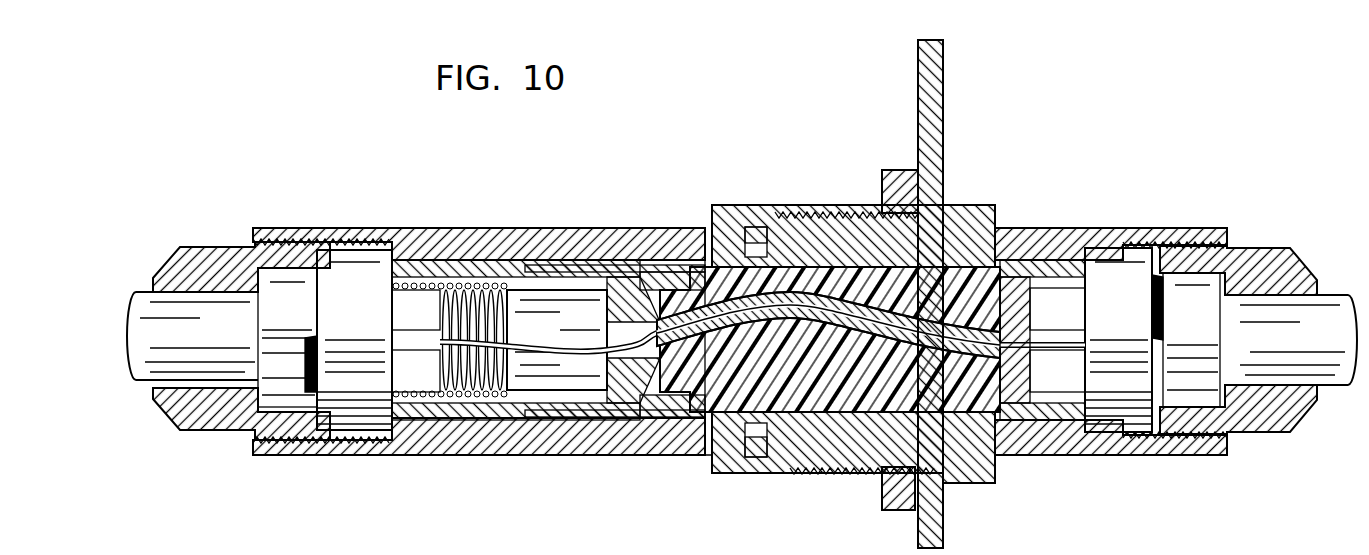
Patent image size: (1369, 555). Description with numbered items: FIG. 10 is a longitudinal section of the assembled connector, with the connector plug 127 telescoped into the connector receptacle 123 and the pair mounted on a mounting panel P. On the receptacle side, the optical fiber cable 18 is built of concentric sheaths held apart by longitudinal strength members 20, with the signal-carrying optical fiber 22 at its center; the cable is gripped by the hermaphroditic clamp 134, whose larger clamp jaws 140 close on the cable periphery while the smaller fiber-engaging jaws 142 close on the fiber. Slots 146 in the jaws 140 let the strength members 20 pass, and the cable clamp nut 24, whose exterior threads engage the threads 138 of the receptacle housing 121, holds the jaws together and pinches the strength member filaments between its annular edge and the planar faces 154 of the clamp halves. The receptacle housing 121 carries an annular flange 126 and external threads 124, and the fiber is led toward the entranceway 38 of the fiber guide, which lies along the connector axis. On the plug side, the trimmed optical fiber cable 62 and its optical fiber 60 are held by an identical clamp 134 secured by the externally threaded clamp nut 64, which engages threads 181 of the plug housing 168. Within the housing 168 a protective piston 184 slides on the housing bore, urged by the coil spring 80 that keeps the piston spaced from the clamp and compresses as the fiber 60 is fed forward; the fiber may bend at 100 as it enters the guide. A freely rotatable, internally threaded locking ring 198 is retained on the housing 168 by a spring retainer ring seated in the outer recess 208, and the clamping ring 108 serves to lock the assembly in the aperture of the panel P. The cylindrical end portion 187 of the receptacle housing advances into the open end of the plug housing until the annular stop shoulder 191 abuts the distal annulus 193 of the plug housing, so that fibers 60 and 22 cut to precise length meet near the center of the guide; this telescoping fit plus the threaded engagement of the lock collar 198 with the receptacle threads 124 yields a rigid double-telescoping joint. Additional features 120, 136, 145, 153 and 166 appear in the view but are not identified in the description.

The optical fiber cable 18 is at (1284, 331).
The strength members 20 is at (1158, 290).
The optical fiber 22 is at (1015, 412).
The cable clamp nut 24 is at (200, 425).
The entranceway 38 is at (660, 398).
The optical fiber 60 is at (510, 339).
The optical fiber cable 62 is at (192, 331).
The clamp nut 64 is at (1283, 432).
The coil spring 80 is at (470, 300).
The bend 100 is at (540, 358).
The clamping ring 108 is at (898, 170).
The connector assembly 120 is at (810, 97).
The receptacle housing 121 is at (663, 226).
The connector receptacle 123 is at (1058, 180).
The threads 124 is at (836, 472).
The annular flange 126 is at (975, 206).
The connector plug 127 is at (702, 225).
The clamp 134 is at (382, 248).
The receptacle housing 136 is at (1190, 238).
The threads 138 is at (1195, 436).
The clamp jaws 140 is at (296, 319).
The fiber-engaging jaws 142 is at (425, 325).
The inner sleeve 145 is at (1062, 228).
The slots 146 is at (292, 395).
The shoulder 153 is at (497, 554).
The planar faces 154 is at (1150, 380).
The thread 166 is at (300, 240).
The plug housing 168 is at (540, 250).
The threads 181 is at (257, 240).
The protective piston 184 is at (622, 402).
The cylindrical end portion 187 is at (712, 416).
The annular stop shoulder 191 is at (758, 460).
The distal annulus 193 is at (790, 472).
The locking ring 198 is at (777, 208).
The outer recess 208 is at (755, 227).
The mounting panel P is at (944, 108).